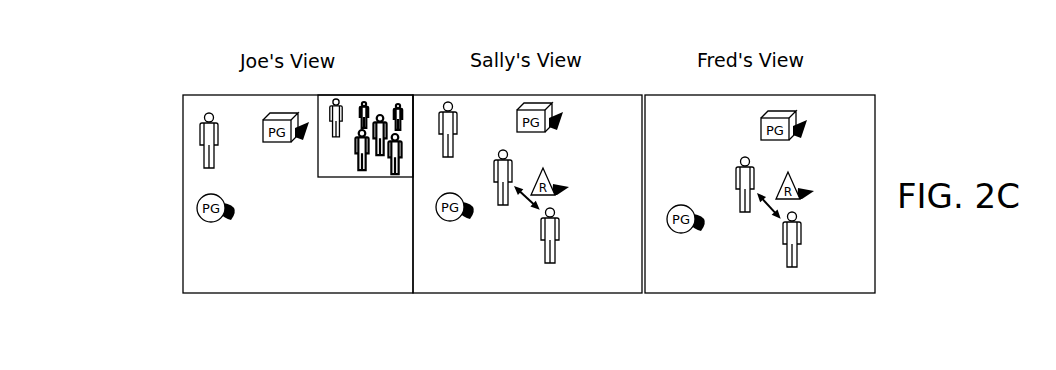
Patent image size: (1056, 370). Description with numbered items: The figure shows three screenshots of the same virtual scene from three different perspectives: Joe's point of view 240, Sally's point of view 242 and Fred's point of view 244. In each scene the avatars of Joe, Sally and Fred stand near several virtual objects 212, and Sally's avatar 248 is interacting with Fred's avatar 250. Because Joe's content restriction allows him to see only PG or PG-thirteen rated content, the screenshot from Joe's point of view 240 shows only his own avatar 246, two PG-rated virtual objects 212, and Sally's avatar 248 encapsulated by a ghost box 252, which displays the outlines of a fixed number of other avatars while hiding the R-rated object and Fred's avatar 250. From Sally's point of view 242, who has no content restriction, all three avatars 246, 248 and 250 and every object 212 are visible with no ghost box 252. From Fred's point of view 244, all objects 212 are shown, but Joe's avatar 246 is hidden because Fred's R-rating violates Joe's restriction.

The Joe's point of view 240 is at (215, 93).
The Sally's point of view 242 is at (440, 93).
The Fred's point of view 244 is at (678, 93).
The Joe's avatar 246 is at (198, 148).
The Sally's avatar 248 is at (330, 126).
The Fred's avatar 250 is at (565, 247).
The ghost box 252 is at (377, 182).
The virtual objects 212 is at (275, 143).